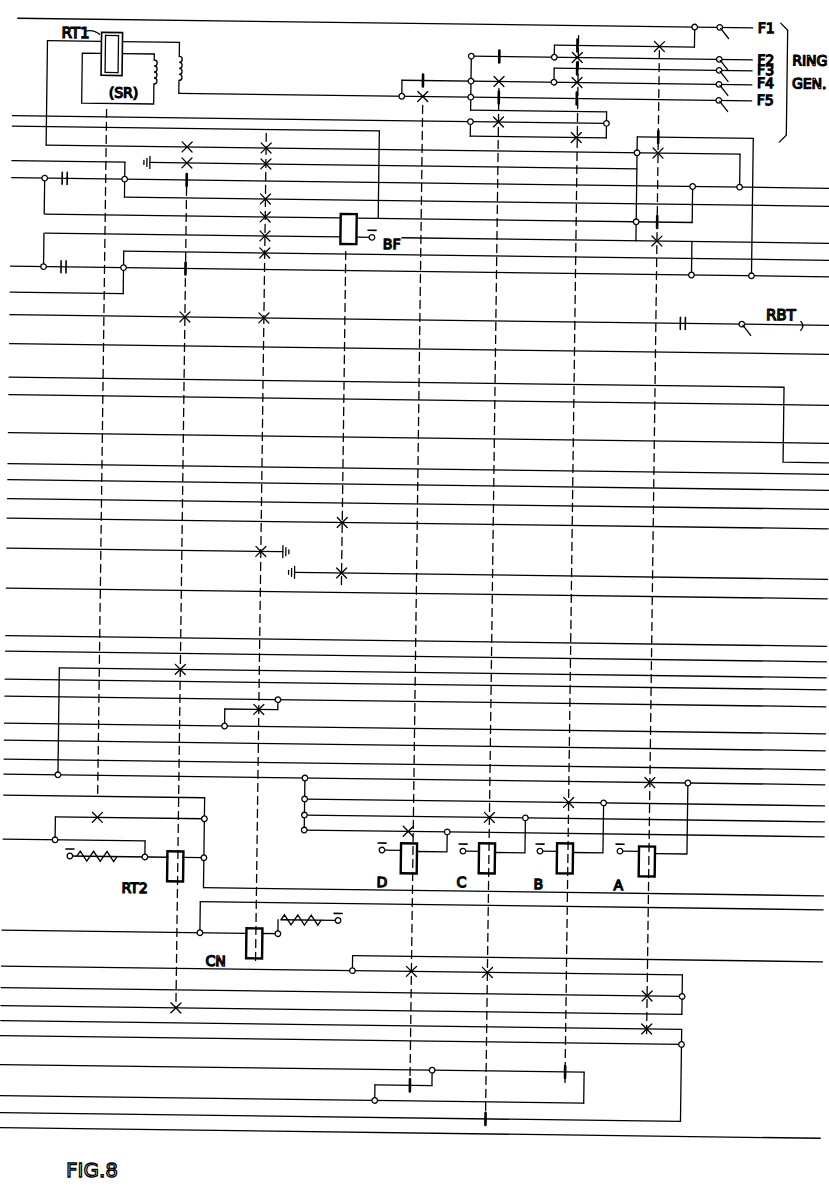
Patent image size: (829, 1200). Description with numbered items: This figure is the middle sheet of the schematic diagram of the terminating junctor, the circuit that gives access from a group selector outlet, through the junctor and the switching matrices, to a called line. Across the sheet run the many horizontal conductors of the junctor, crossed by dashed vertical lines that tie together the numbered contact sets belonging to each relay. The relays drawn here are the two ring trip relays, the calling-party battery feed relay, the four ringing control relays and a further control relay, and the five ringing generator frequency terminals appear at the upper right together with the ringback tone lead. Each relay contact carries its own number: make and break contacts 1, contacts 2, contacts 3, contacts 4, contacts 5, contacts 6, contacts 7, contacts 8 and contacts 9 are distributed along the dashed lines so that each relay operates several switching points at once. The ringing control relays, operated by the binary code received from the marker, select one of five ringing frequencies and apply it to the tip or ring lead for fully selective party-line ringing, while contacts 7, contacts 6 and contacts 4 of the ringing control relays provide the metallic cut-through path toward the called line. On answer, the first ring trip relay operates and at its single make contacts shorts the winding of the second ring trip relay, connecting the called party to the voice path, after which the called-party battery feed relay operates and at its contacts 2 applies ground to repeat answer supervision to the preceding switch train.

The relay contact 1 is at (185, 142).
The relay contacts 2 is at (193, 159).
The relay contact 3 is at (185, 183).
The relay contacts 4 is at (275, 215).
The relay contact 5 is at (275, 234).
The relay contacts 6 is at (275, 251).
The relay contacts 7 is at (272, 310).
The relay contact 8 is at (263, 544).
The relay contact 9 is at (275, 708).